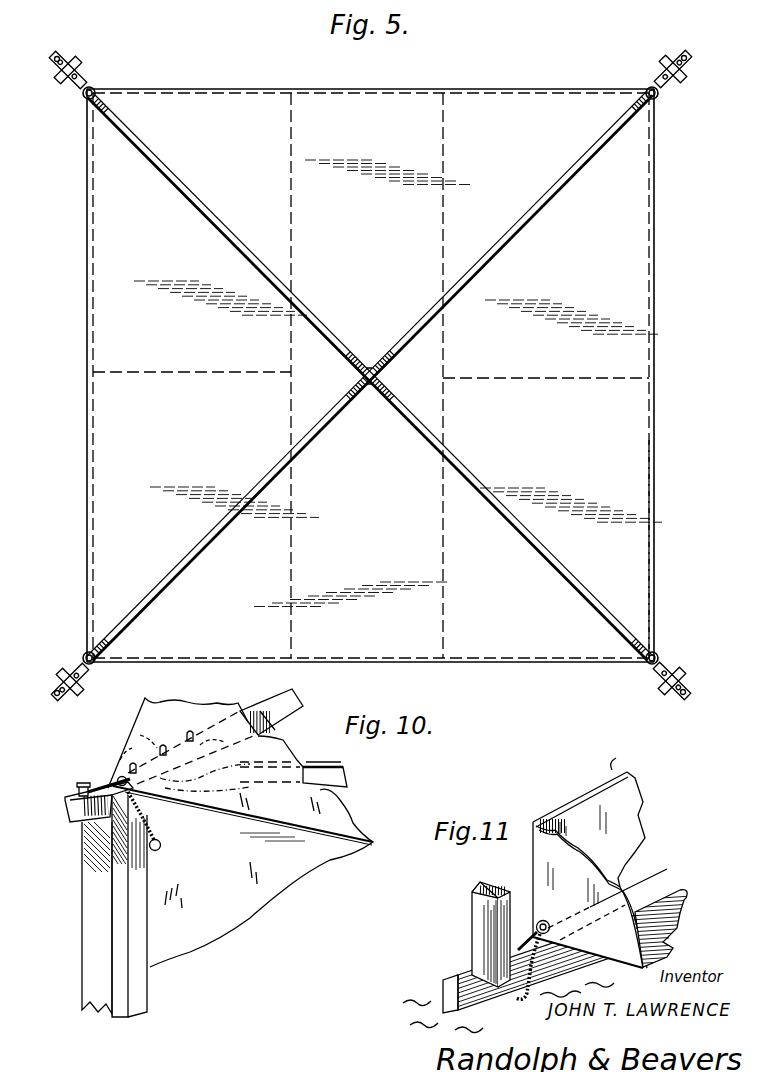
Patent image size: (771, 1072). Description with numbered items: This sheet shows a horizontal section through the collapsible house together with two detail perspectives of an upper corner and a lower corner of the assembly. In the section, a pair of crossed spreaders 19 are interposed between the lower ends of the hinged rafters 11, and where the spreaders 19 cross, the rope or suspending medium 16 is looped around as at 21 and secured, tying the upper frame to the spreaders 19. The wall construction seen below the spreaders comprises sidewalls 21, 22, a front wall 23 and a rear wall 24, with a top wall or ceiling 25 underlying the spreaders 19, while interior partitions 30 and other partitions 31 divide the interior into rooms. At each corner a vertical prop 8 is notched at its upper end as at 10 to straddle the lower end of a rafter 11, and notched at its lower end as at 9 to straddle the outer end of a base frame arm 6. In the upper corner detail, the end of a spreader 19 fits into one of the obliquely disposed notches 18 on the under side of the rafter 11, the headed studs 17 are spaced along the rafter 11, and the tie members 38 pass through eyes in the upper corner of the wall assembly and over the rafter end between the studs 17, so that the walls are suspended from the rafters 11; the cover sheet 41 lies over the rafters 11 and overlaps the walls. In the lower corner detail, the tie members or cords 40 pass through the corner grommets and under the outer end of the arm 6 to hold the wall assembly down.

In FIG. 11, the arms 6 is at (686, 910).
In FIG. 5, the vertical props 8 is at (57, 84).
In FIG. 10, the vertical props 8 is at (82, 896).
In FIG. 11, the vertical props 8 is at (472, 900).
In FIG. 11, the notches 9 is at (470, 960).
In FIG. 10, the notches 10 is at (82, 832).
In FIG. 5, the hinged rafters 11 is at (90, 100).
In FIG. 10, the hinged rafters 11 is at (300, 712).
In FIG. 5, the rope or suspending medium 16 is at (371, 368).
In FIG. 5, the headed studs 17 is at (80, 79).
In FIG. 10, the headed studs 17 is at (76, 781).
In FIG. 10, the notches 18 is at (236, 712).
In FIG. 5, the crossed spreaders 19 is at (226, 204).
In FIG. 10, the crossed spreaders 19 is at (318, 764).
In FIG. 11, the loop of the rope / sidewall 21 is at (618, 775).
In FIG. 5, the sidewall 22 is at (656, 322).
In FIG. 5, the front wall 23 is at (533, 664).
In FIG. 10, the front wall 23 is at (262, 900).
In FIG. 11, the front wall 23 is at (610, 904).
In FIG. 5, the rear wall 24 is at (236, 88).
In FIG. 5, the top wall or ceiling 25 is at (655, 505).
In FIG. 5, the partitions 30 is at (448, 432).
In FIG. 5, the partitions 31 is at (210, 376).
In FIG. 5, the tie members 38 is at (97, 84).
In FIG. 10, the tie members 38 is at (120, 774).
In FIG. 11, the tie members 38 is at (533, 960).
In FIG. 11, the tie members or cords 40 is at (492, 1010).
In FIG. 10, the cover sheet 41 is at (178, 712).